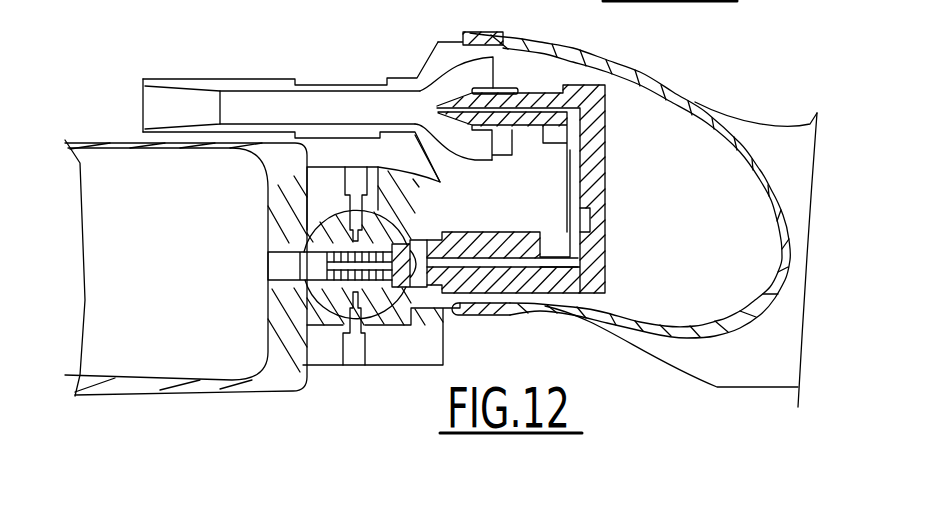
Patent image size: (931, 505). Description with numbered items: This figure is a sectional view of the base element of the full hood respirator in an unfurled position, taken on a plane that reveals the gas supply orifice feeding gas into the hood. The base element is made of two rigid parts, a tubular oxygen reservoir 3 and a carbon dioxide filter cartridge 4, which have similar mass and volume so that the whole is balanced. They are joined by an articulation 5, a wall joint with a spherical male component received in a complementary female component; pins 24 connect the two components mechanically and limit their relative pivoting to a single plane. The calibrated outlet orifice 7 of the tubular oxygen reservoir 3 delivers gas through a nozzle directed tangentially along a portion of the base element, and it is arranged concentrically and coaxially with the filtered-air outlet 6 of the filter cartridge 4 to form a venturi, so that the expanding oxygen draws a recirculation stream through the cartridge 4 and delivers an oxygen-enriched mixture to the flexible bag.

The tubular oxygen reservoir 3 is at (160, 372).
The carbon dioxide filter cartridge 4 is at (675, 303).
The articulation 5 is at (376, 200).
The filtered-air outlet 6 is at (128, 105).
The calibrated outlet orifice 7 is at (424, 106).
The pins 24 is at (340, 220).